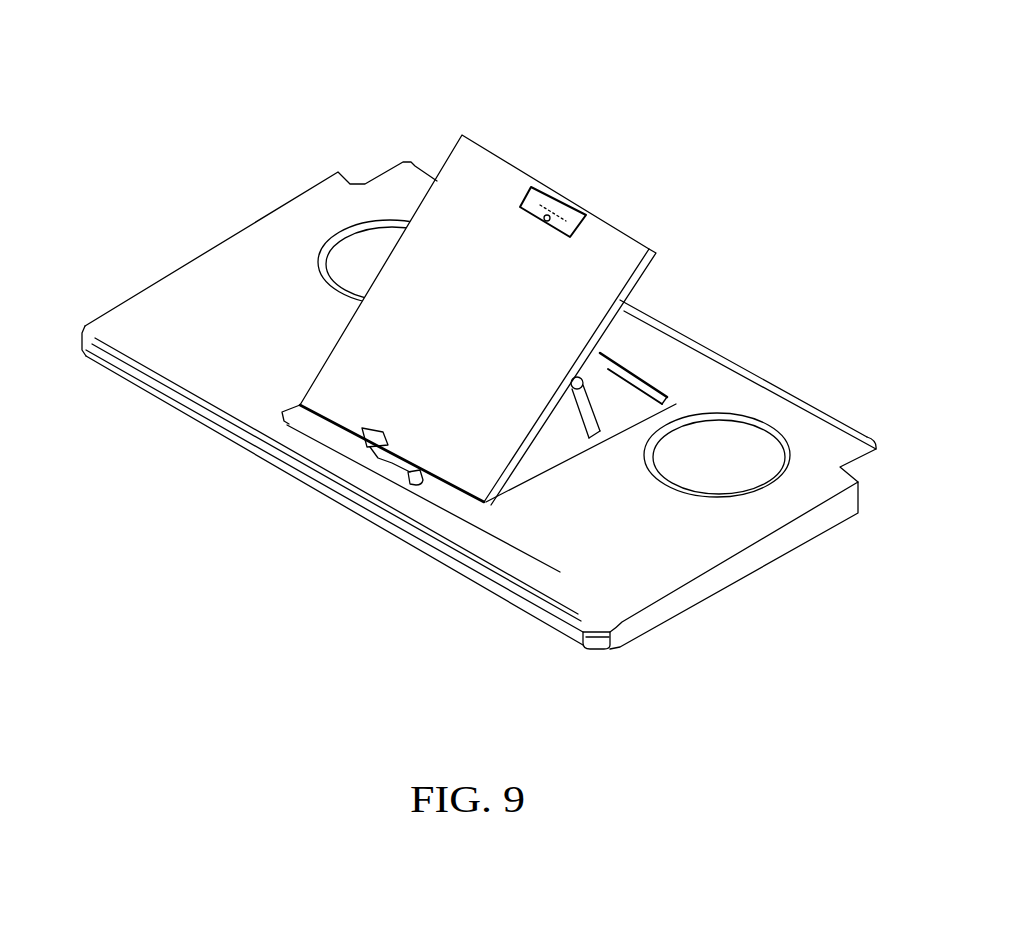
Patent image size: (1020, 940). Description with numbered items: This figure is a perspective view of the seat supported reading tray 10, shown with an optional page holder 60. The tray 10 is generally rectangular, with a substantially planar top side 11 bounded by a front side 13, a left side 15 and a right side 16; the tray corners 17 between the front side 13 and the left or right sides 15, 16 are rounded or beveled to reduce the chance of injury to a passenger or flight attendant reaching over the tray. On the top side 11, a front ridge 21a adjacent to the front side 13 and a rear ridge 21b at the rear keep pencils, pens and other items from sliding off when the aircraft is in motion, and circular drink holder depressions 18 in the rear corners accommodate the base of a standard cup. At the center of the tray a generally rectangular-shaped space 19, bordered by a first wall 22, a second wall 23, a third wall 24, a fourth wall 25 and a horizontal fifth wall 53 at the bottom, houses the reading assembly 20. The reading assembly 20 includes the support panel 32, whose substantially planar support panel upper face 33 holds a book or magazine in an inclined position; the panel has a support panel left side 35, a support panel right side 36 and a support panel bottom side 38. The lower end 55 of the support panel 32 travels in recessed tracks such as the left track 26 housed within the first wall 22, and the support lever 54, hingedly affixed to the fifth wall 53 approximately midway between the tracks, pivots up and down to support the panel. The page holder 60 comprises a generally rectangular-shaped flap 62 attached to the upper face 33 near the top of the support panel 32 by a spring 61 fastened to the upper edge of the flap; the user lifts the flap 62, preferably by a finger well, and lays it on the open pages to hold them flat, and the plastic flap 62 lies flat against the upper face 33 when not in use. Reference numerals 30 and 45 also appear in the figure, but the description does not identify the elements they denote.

The seat supported reading tray 10 is at (581, 107).
The top side 11 is at (672, 526).
The front side 13 is at (206, 418).
The left side 15 is at (170, 272).
The right side 16 is at (755, 560).
The tray corners 17 is at (80, 333).
The drink holder depression 18 is at (362, 255).
The rectangular-shaped space 19 is at (638, 407).
The reading assembly 20 is at (207, 485).
The front ridge 21a is at (565, 615).
The rear ridge 21b is at (725, 357).
The first wall 22 is at (287, 416).
The second wall 23 is at (640, 386).
The third wall 24 is at (560, 462).
The fourth wall 25 is at (355, 463).
The left track 26 is at (285, 422).
The hinge slot 30 is at (612, 395).
The support panel 32 is at (636, 198).
The support panel upper face 33 is at (474, 318).
The support panel left side 35 is at (323, 355).
The support panel right side 36 is at (643, 273).
The support panel bottom side 38 is at (500, 472).
The panel top edge 45 is at (468, 193).
The fifth wall 53 is at (577, 410).
The support lever 54 is at (392, 462).
The lower end of the support panel 55 is at (475, 473).
The page holder 60 is at (545, 196).
The spring 61 is at (563, 198).
The flap 62 is at (568, 200).